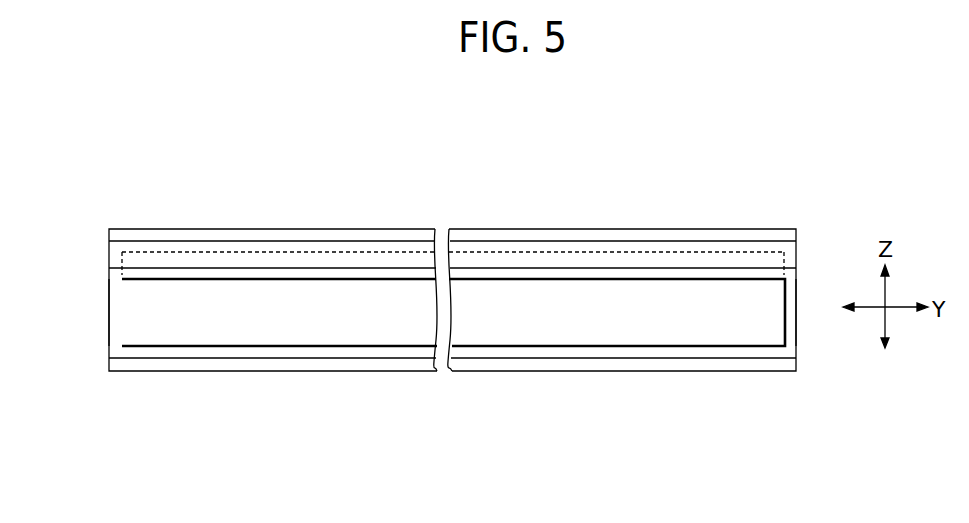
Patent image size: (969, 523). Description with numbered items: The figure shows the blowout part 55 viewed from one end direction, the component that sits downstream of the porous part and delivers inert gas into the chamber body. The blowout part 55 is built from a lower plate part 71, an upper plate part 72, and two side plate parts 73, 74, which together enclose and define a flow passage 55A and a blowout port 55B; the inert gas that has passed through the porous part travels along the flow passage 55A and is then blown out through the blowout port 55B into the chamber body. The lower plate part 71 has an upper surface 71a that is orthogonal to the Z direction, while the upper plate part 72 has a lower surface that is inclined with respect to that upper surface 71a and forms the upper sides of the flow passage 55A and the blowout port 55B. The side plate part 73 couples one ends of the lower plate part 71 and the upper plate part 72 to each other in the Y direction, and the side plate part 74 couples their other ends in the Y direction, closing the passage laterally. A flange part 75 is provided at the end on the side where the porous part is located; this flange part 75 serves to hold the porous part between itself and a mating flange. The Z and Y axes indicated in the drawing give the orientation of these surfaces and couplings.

The blowout part 55 is at (86, 163).
The flow passage 55A is at (633, 317).
The blowout port 55B is at (575, 315).
The lower plate part 71 is at (672, 372).
The upper surface 71a is at (700, 346).
The upper plate part 72 is at (650, 248).
The side plate part 73 is at (790, 335).
The side plate part 74 is at (115, 318).
The flange part 75 is at (252, 235).